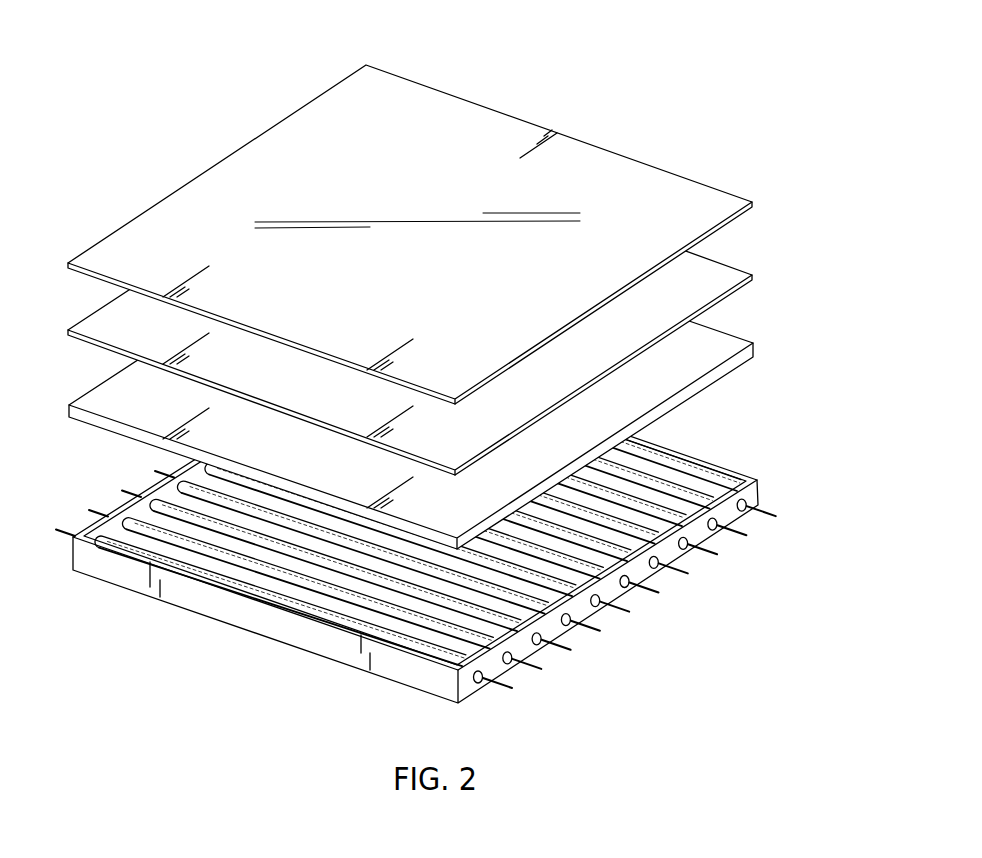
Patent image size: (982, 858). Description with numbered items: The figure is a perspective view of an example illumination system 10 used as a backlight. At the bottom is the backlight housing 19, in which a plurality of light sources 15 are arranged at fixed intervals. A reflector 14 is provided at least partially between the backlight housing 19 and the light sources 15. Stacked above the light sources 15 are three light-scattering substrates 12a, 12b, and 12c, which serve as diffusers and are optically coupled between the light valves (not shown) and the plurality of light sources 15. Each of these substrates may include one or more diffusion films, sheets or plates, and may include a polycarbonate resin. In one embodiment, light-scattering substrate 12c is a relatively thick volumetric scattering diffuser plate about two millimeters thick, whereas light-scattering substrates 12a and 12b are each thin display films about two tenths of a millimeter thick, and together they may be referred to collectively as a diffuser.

The illumination system 10 is at (709, 101).
The light-scattering substrate 12a is at (707, 197).
The light-scattering substrate 12b is at (708, 269).
The light-scattering substrate 12c is at (707, 343).
The reflector 14 is at (373, 595).
The light sources 15 is at (282, 575).
The backlight housing 19 is at (438, 682).